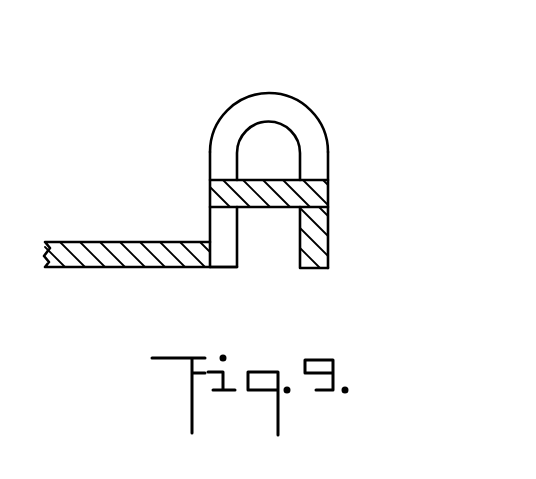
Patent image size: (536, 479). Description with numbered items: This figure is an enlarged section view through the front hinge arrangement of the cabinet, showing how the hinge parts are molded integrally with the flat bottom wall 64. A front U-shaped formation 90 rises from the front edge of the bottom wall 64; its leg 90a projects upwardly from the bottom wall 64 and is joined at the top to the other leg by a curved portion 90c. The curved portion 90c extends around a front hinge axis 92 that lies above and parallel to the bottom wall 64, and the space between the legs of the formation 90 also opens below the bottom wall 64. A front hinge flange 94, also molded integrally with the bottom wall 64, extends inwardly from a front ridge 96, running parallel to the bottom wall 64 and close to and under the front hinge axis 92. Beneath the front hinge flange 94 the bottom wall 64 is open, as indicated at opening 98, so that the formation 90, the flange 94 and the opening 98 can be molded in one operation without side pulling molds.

The front U-shaped formation 90 is at (324, 91).
The leg 90a is at (210, 223).
The curved portion 90c is at (268, 103).
The front hinge axis 92 is at (268, 152).
The front hinge flange 94 is at (257, 177).
The front ridge 96 is at (330, 245).
The opening 98 is at (268, 258).
The bottom wall 64 is at (72, 242).